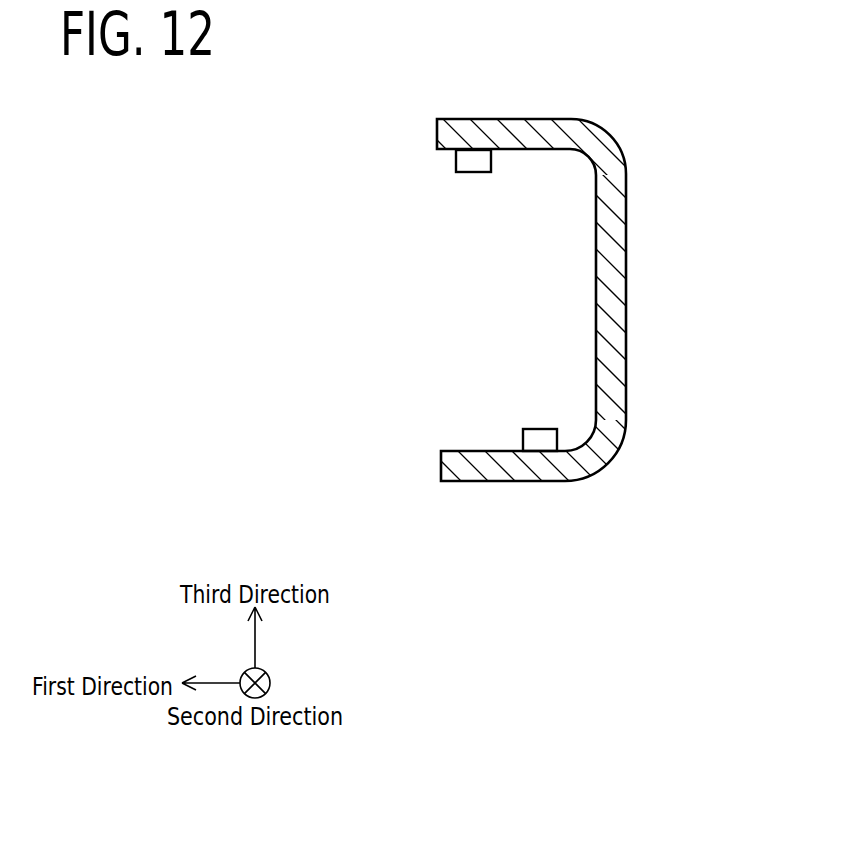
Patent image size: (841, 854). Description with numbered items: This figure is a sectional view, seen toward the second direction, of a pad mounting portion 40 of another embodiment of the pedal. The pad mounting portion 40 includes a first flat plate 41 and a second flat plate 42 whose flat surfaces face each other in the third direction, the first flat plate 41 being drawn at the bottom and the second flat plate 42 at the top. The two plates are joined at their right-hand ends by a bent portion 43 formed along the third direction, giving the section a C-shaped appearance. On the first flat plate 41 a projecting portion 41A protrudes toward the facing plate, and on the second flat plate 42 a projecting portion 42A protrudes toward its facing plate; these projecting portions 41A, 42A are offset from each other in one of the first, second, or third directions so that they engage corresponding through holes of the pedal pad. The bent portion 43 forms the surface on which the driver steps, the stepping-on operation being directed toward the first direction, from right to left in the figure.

The pad mounting portion 40 is at (651, 92).
The first flat plate 41 is at (447, 470).
The projecting portion 41A is at (538, 438).
The second flat plate 42 is at (445, 130).
The projecting portion 42A is at (473, 166).
The bent portion 43 is at (610, 300).